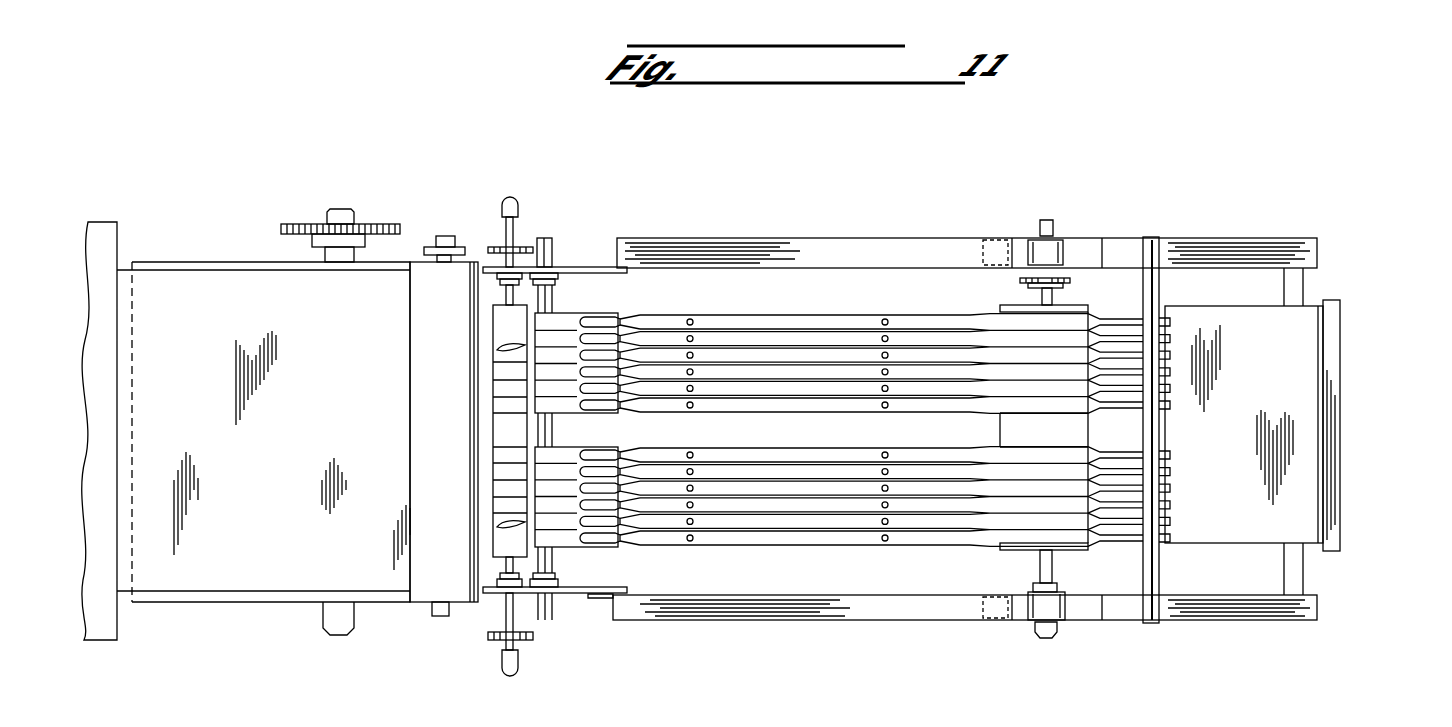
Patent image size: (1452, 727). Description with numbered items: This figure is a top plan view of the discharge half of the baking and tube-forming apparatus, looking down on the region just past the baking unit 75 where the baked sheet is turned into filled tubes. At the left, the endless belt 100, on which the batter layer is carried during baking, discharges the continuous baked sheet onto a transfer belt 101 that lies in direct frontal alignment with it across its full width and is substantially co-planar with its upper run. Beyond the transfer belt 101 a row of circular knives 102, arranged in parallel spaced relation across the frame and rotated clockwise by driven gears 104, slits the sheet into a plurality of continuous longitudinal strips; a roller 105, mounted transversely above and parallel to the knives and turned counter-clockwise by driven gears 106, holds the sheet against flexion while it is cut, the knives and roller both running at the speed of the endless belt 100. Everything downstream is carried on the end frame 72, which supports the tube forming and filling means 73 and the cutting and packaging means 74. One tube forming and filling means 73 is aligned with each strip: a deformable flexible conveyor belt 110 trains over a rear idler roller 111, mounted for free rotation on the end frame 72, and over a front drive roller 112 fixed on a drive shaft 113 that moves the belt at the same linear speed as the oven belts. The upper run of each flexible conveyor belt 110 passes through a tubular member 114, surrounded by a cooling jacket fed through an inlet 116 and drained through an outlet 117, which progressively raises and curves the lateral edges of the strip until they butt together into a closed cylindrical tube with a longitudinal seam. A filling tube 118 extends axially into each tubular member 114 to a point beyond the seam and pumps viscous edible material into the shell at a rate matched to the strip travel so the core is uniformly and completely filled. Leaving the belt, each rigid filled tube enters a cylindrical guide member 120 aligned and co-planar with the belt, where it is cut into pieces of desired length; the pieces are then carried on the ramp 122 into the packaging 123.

The end frame 72 is at (849, 606).
The tube forming and filling means 73 is at (677, 302).
The cutting and packaging means 74 is at (1200, 294).
The baking unit 75 is at (100, 640).
The endless belt 100 is at (183, 280).
The transfer belt 101 is at (422, 265).
The circular knives 102 is at (507, 413).
The driven gears 104 is at (520, 245).
The roller 105 is at (505, 320).
The driven gears 106 is at (533, 634).
The flexible conveyor belt 110 is at (553, 318).
The rear idler roller 111 is at (548, 253).
The front drive roller 112 is at (1073, 310).
The drive shaft 113 is at (1048, 232).
The tubular member 114 is at (798, 340).
The inlet 116 is at (690, 328).
The outlet 117 is at (890, 325).
The filling tube 118 is at (603, 320).
The cylindrical guide member 120 is at (1096, 543).
The ramp 122 is at (1294, 318).
The packaging 123 is at (1330, 365).